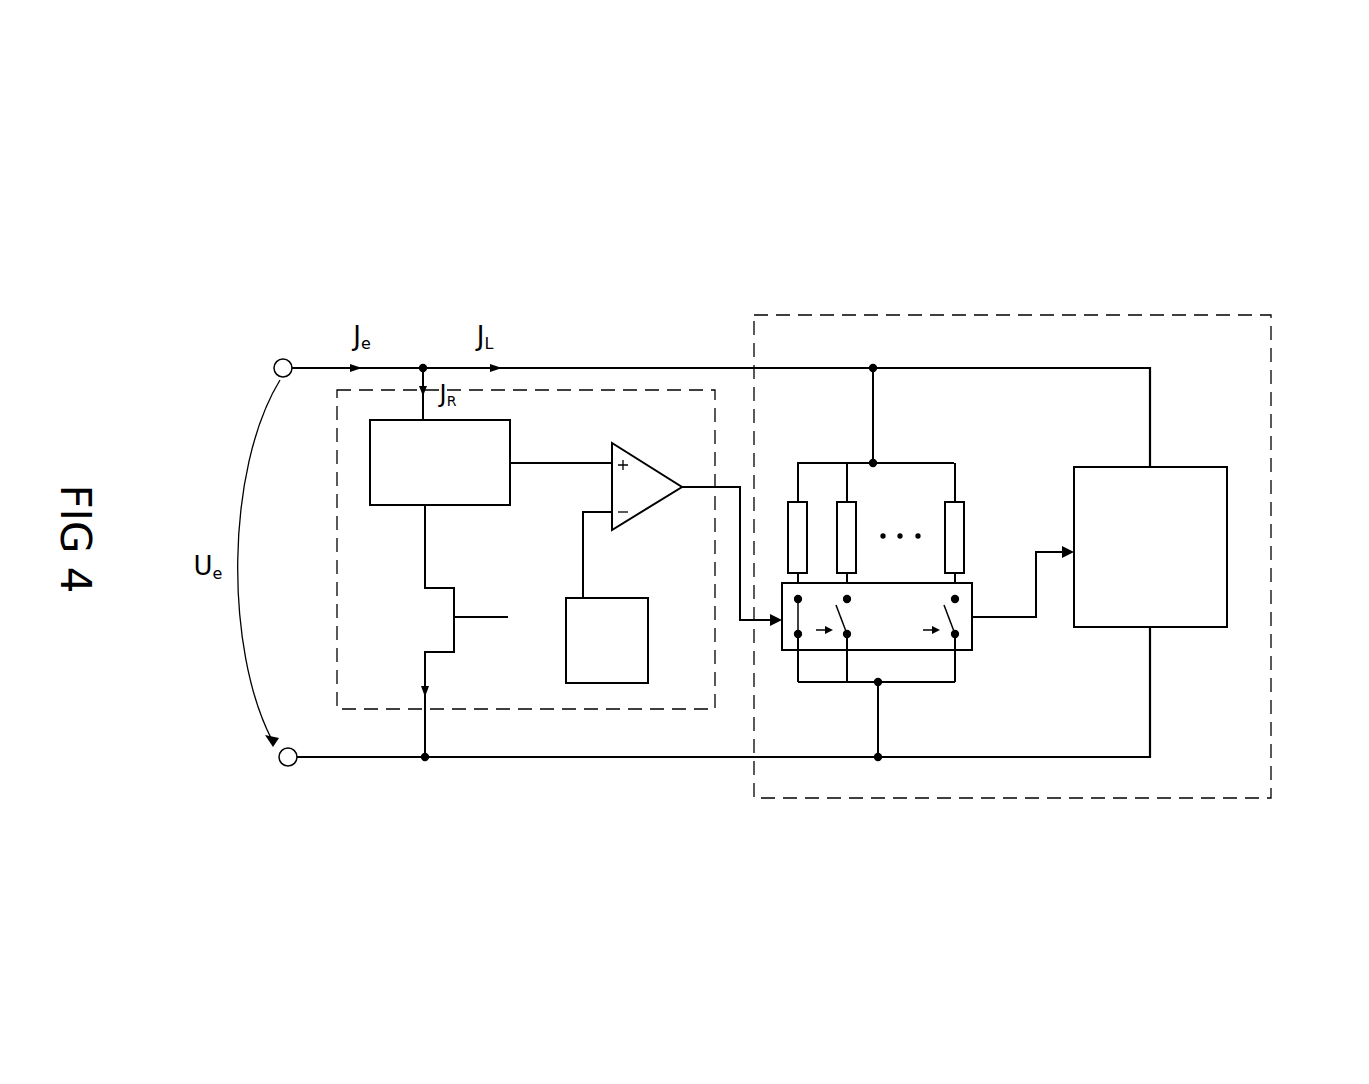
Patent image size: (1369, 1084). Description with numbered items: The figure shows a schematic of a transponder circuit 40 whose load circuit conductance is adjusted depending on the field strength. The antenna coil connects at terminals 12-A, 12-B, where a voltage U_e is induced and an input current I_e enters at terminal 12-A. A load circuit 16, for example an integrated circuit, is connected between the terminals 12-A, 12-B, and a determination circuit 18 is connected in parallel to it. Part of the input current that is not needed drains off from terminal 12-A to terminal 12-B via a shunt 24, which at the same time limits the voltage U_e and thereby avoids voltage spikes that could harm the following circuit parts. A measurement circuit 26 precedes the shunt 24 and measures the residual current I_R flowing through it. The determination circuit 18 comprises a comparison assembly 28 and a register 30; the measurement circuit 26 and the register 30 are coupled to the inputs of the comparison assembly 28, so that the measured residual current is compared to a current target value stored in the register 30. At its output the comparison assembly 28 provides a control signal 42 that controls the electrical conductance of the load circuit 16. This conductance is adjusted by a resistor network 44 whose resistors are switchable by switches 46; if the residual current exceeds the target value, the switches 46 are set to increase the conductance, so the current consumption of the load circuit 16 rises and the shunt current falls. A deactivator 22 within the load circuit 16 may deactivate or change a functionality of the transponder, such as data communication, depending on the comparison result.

The transponder circuit 40 is at (1197, 210).
The terminal 12-A is at (284, 358).
The terminal 12-B is at (290, 766).
The load circuit 16 is at (1271, 487).
The determination circuit 18 is at (500, 710).
The deactivator 22 is at (1227, 590).
The shunt 24 is at (431, 627).
The measurement circuit 26 is at (370, 465).
The comparison assembly 28 is at (622, 452).
The register 30 is at (620, 684).
The control signal 42 is at (740, 580).
The resistor network 44 is at (919, 457).
The switches 46 is at (972, 648).